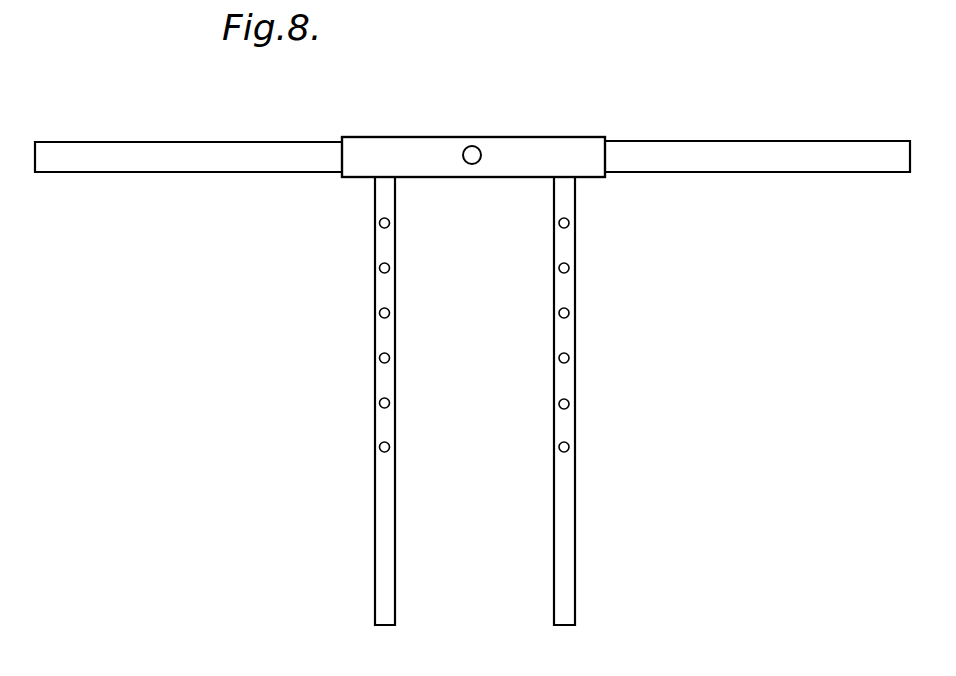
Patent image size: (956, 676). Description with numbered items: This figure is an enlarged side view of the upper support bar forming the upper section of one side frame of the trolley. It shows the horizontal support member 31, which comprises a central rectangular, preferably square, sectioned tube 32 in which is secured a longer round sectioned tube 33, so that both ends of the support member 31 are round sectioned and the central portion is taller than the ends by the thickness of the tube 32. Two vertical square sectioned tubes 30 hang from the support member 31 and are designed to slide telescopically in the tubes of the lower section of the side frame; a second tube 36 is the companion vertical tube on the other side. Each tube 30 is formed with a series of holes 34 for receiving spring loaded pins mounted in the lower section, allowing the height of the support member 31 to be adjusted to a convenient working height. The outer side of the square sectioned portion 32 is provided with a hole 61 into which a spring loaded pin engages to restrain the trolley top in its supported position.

The vertical square sectioned tubes 30 is at (378, 339).
The horizontal support member 31 is at (345, 132).
The central rectangular sectioned tube 32 is at (400, 137).
The round sectioned tube 33 is at (174, 164).
The holes 34 is at (390, 447).
The right leg 36 is at (568, 385).
The hole 61 is at (473, 146).